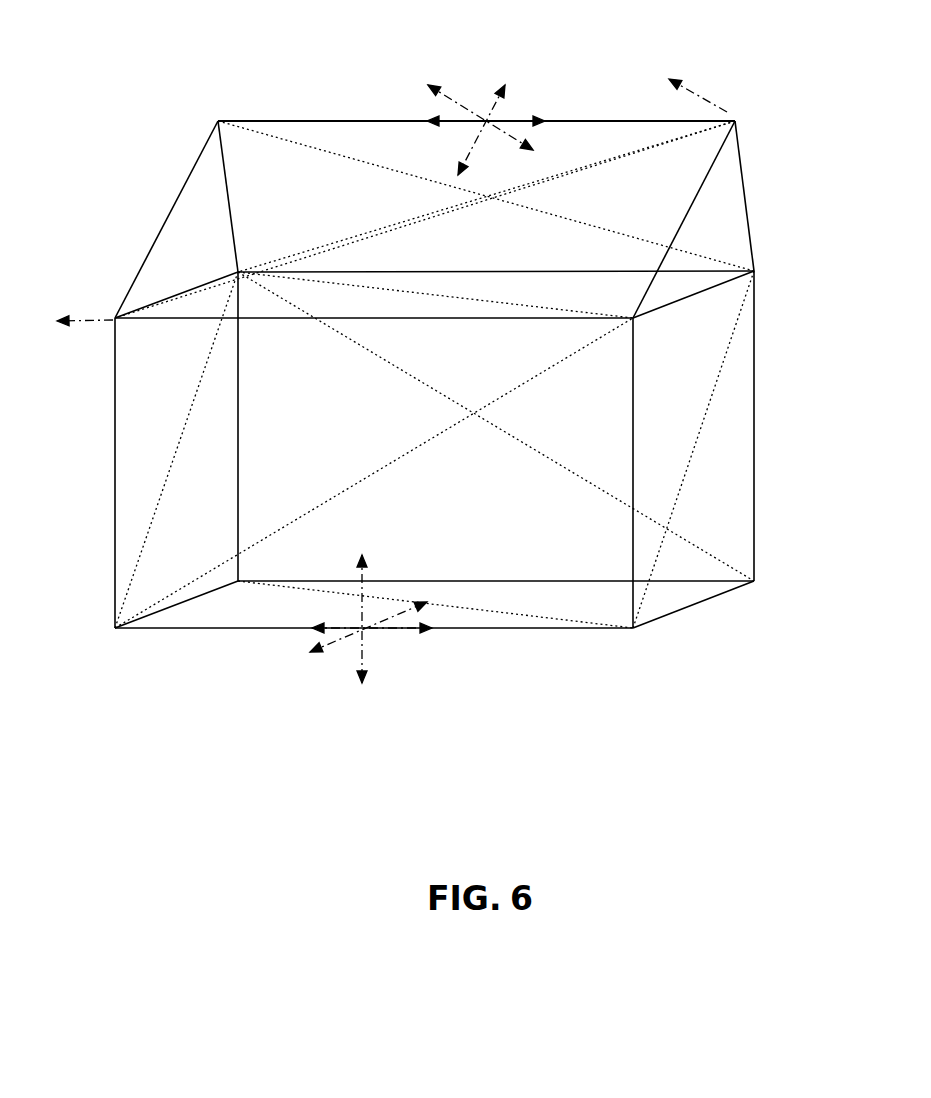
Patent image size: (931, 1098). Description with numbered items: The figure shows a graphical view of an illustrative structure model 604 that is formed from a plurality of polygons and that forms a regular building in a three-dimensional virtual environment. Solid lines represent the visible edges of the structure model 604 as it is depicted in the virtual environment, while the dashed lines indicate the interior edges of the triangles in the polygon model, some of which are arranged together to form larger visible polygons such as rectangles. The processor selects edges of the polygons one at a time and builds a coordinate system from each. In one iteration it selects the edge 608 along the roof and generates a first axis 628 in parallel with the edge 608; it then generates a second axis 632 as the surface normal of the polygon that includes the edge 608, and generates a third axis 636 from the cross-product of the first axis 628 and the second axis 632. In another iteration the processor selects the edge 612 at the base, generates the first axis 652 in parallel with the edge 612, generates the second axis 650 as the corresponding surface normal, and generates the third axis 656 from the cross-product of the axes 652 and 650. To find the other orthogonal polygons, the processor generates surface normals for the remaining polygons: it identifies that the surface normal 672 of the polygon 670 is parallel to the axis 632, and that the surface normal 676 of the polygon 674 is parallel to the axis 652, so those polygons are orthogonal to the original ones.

The structure model 604 is at (233, 87).
The edge 608 is at (380, 120).
The edge 612 is at (256, 630).
The first axis 628 is at (533, 113).
The second axis 632 is at (523, 130).
The third axis 636 is at (470, 139).
The second axis 650 is at (407, 620).
The first axis 652 is at (380, 633).
The third axis 656 is at (358, 608).
The polygon 670 is at (690, 200).
The surface normal 672 is at (730, 108).
The polygon 674 is at (115, 453).
The surface normal 676 is at (102, 310).